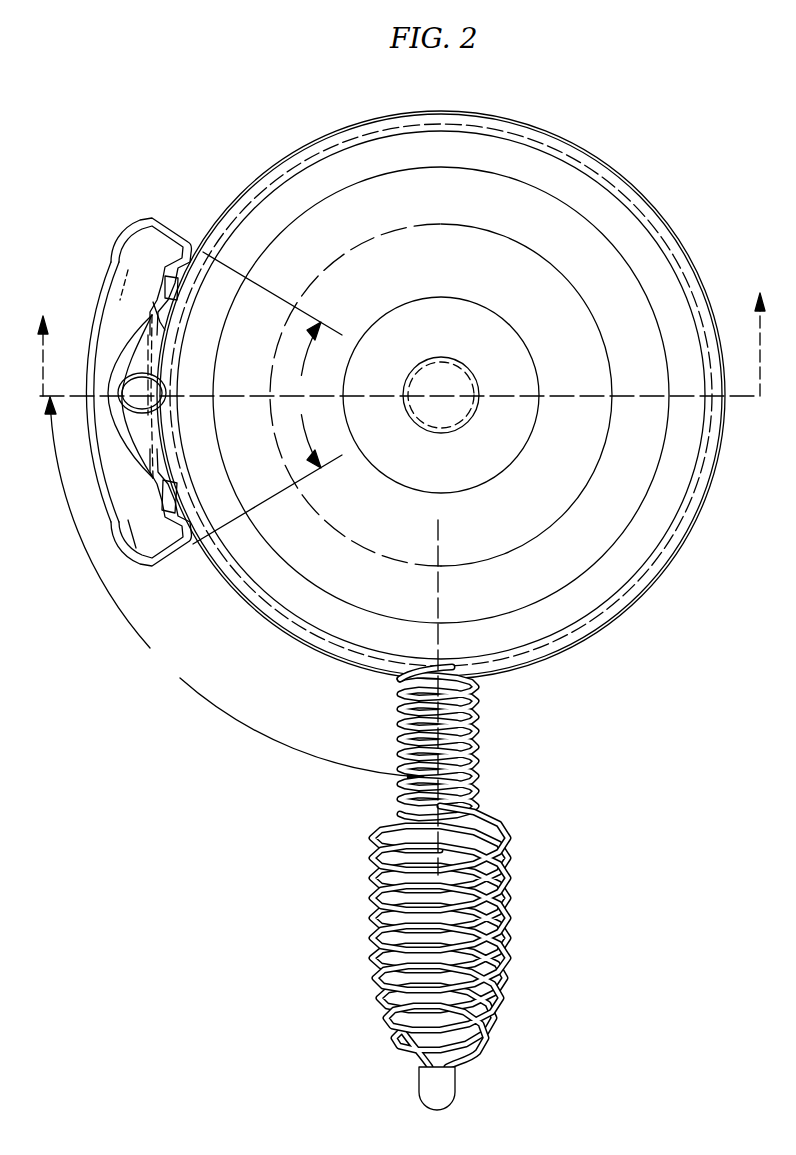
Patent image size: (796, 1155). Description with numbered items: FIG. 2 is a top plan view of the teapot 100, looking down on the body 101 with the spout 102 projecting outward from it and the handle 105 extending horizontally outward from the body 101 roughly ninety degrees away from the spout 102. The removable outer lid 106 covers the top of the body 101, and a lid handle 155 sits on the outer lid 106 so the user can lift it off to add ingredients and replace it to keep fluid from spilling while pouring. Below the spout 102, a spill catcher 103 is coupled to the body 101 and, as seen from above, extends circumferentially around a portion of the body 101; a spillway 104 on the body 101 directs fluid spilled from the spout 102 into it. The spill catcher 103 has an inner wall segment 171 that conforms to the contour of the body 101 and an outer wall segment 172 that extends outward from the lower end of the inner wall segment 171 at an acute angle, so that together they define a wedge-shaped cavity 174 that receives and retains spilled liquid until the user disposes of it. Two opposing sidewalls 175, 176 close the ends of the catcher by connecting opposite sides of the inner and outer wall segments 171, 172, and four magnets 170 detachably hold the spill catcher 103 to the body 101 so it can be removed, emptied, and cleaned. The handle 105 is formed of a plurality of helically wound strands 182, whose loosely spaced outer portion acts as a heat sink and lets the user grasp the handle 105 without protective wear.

The teapot 100 is at (144, 79).
The body 101 is at (568, 128).
The spout 102 is at (120, 426).
The spill catcher 103 is at (129, 219).
The spillway 104 is at (132, 334).
The handle 105 is at (353, 918).
The removable outer lid 106 is at (422, 150).
The lid handle 155 is at (442, 412).
The magnets 170 is at (180, 283).
The inner wall segment 171 is at (160, 320).
The outer wall segment 172 is at (110, 518).
The wedge-shaped cavity 174 is at (150, 528).
The sidewall 175 is at (193, 236).
The sidewall 176 is at (172, 556).
The helically wound strands 182 is at (508, 912).